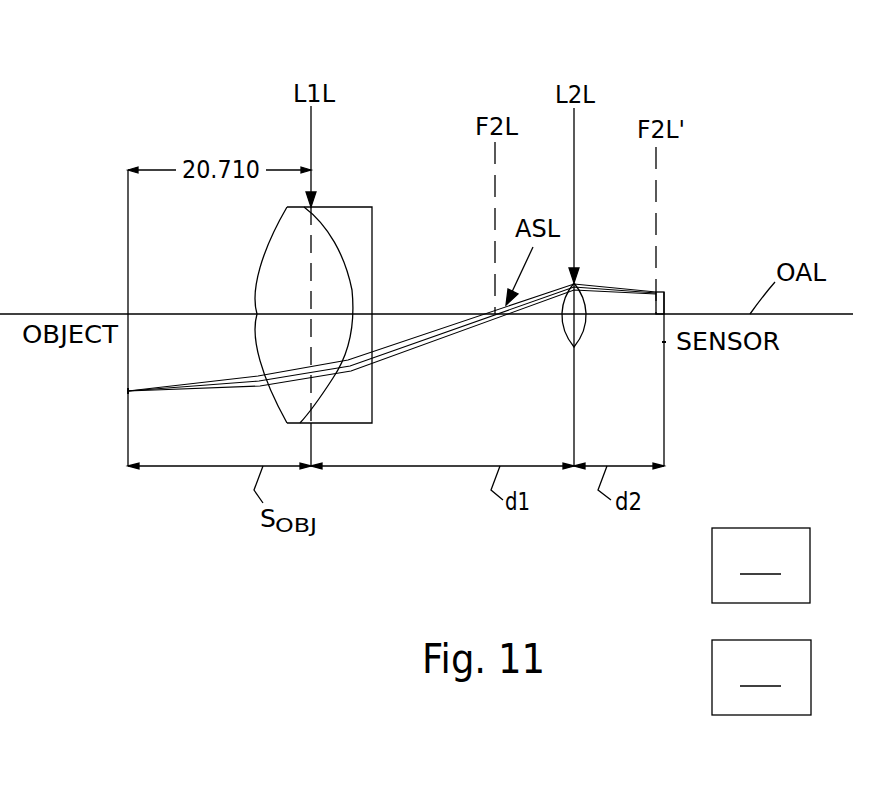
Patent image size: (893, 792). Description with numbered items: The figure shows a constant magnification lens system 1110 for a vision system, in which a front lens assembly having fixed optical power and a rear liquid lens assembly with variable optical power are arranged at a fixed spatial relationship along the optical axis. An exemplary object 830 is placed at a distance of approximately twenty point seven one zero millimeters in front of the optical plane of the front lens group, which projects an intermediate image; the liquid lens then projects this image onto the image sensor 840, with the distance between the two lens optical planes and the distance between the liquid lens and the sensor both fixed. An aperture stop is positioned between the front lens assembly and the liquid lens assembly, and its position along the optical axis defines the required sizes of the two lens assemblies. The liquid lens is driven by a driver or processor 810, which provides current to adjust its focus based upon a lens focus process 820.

The constant magnification lens system 1110 is at (478, 70).
The object 830 is at (128, 362).
The image sensor 840 is at (664, 300).
The driver or processor 810 is at (759, 516).
The lens focus process 820 is at (759, 615).